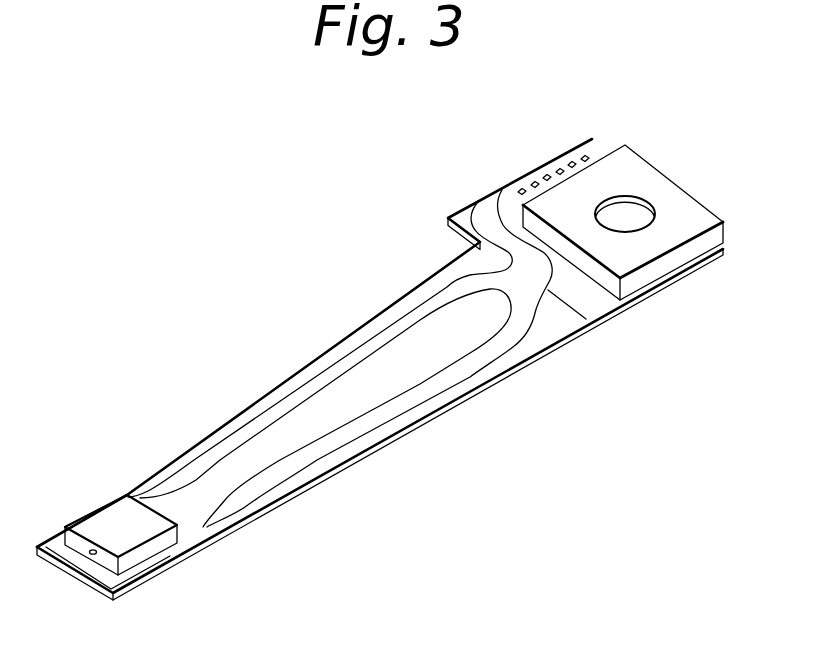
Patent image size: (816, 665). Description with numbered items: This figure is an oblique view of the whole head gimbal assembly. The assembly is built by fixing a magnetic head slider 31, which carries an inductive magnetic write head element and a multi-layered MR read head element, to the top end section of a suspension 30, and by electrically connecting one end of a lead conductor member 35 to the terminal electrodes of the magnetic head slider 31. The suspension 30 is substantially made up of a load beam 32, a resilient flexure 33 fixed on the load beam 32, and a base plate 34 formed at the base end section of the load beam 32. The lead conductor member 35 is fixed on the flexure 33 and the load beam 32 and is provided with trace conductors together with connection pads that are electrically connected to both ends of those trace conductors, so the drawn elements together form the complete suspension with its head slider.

The suspension 30 is at (396, 289).
The magnetic head slider 31 is at (98, 527).
The load beam 32 is at (553, 325).
The resilient flexure 33 is at (458, 332).
The base plate 34 is at (675, 233).
The lead conductor member 35 is at (318, 447).